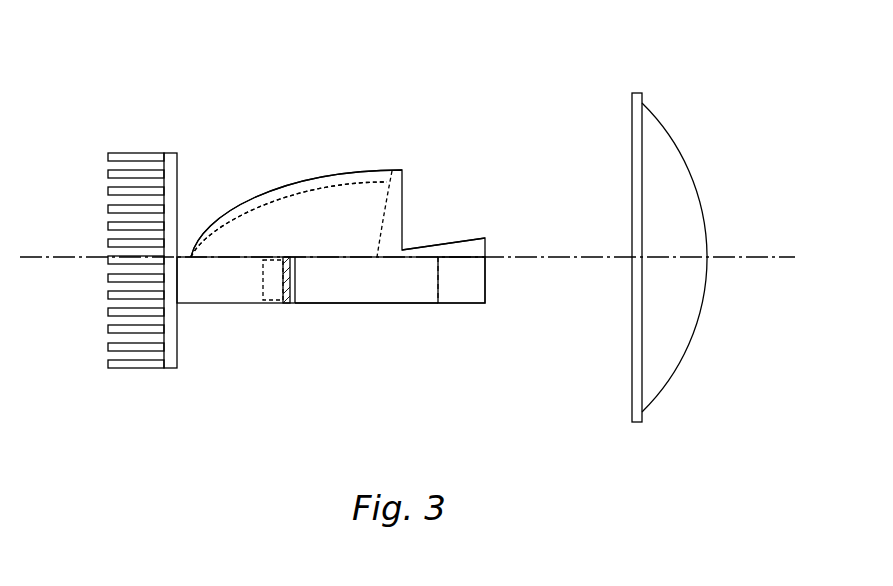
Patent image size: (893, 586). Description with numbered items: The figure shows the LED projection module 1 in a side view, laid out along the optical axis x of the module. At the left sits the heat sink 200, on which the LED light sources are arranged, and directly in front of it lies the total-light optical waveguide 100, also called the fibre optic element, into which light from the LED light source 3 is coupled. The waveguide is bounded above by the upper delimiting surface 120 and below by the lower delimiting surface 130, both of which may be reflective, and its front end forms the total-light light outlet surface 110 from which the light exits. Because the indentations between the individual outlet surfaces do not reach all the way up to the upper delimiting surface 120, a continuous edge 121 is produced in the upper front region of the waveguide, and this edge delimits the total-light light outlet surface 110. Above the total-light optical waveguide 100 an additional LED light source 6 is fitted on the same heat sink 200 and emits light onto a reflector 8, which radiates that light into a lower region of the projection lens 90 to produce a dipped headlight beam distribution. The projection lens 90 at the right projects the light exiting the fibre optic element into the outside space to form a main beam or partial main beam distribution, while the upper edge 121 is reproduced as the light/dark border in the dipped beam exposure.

The LED projection module 1 is at (335, 114).
The LED light source 3 is at (288, 304).
The LED light source 6 is at (233, 256).
The reflector 8 is at (278, 183).
The projection lens 90 is at (668, 165).
The total-light optical waveguide 100 is at (445, 310).
The total-light light outlet surface 110 is at (487, 280).
The upper delimiting surface 120 is at (352, 256).
The continuous edge 121 is at (485, 238).
The lower delimiting surface 130 is at (357, 305).
The heat sink 200 is at (137, 157).
The optical axis x is at (782, 256).